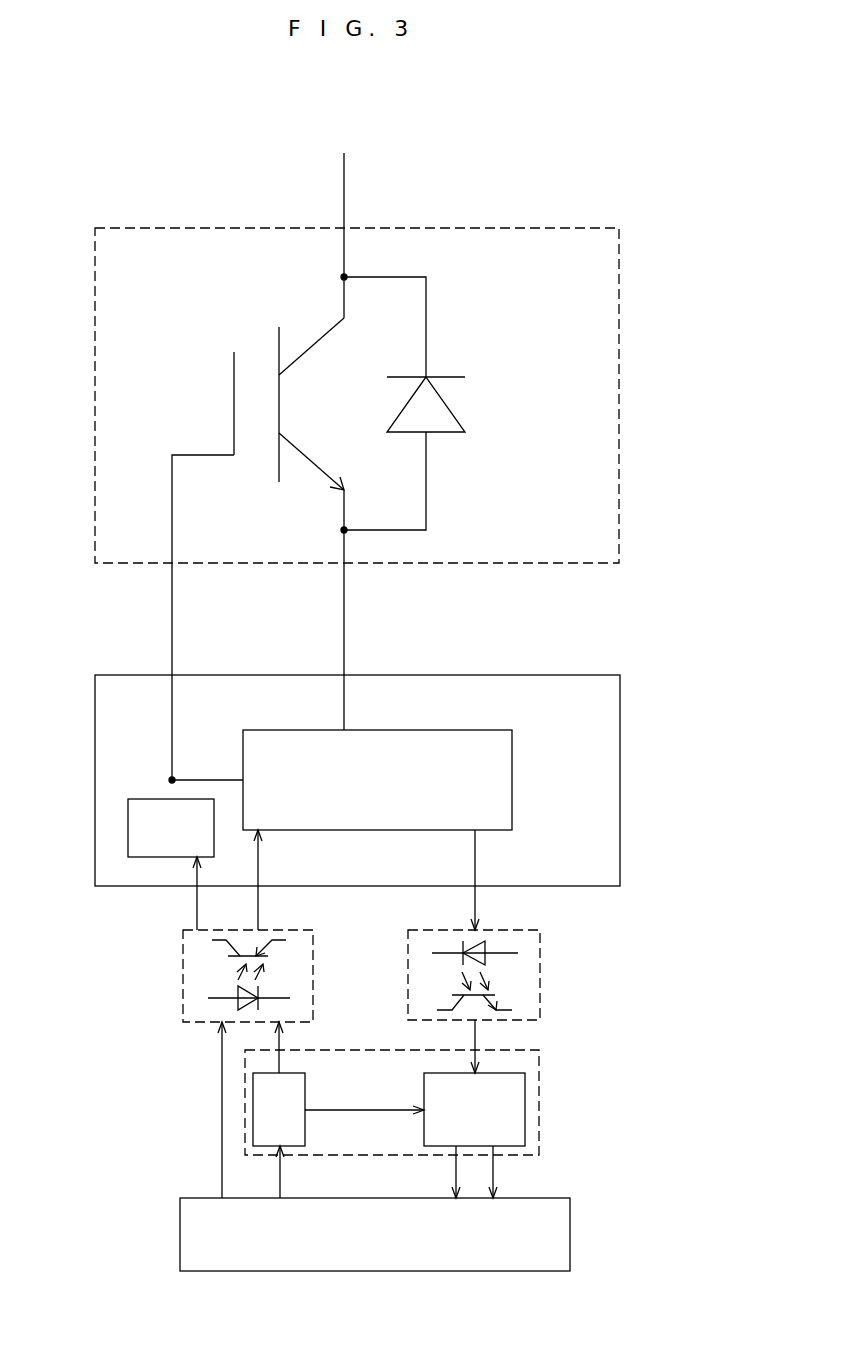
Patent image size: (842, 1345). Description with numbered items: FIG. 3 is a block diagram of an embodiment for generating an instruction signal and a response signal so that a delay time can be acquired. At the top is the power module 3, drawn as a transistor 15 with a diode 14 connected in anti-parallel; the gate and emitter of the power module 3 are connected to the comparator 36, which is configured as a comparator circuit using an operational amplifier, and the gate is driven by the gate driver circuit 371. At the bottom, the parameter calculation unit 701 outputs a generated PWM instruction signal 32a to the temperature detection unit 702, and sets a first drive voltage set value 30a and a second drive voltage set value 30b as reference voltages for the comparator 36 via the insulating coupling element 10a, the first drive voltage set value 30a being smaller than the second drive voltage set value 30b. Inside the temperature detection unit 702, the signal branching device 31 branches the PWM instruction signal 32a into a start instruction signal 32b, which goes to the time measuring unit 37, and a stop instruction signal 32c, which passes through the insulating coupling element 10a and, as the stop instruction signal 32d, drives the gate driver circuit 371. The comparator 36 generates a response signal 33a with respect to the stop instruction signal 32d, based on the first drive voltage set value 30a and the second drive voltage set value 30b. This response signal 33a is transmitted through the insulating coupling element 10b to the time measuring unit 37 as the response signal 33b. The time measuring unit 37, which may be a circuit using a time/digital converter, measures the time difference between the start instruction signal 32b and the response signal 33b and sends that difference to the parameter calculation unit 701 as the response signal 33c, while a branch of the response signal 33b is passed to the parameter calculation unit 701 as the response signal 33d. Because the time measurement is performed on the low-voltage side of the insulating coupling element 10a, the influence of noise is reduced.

The power module 3 is at (488, 228).
The diode 14 is at (440, 374).
The transistor 15 is at (234, 376).
The comparator 36 is at (512, 757).
The gate driver circuit 371 is at (128, 826).
The stop instruction signal 32d is at (197, 912).
The first drive voltage set value 30a is at (262, 865).
The response signal 33a is at (478, 866).
The insulating coupling element 10a is at (183, 975).
The insulating coupling element 10b is at (540, 956).
The second drive voltage set value 30b is at (222, 1060).
The stop instruction signal 32c is at (279, 1058).
The temperature detection unit 702 is at (540, 1072).
The signal branching device 31 is at (253, 1110).
The start instruction signal 32b is at (360, 1108).
The response signal 33b is at (478, 1037).
The time measuring unit 37 is at (525, 1125).
The PWM instruction signal 32a is at (280, 1178).
The response signal 33d is at (456, 1175).
The response signal 33c is at (495, 1174).
The parameter calculation unit 701 is at (570, 1228).